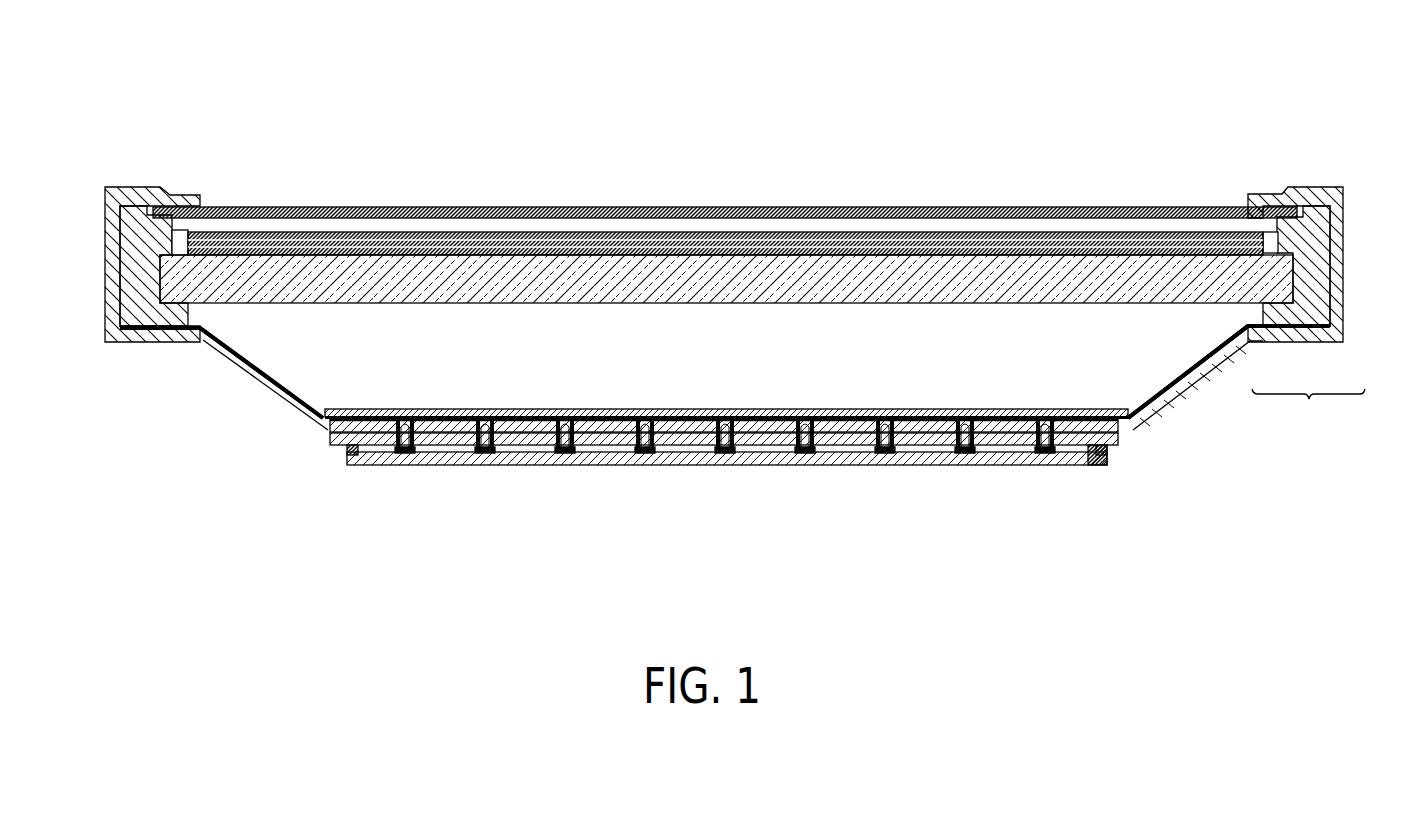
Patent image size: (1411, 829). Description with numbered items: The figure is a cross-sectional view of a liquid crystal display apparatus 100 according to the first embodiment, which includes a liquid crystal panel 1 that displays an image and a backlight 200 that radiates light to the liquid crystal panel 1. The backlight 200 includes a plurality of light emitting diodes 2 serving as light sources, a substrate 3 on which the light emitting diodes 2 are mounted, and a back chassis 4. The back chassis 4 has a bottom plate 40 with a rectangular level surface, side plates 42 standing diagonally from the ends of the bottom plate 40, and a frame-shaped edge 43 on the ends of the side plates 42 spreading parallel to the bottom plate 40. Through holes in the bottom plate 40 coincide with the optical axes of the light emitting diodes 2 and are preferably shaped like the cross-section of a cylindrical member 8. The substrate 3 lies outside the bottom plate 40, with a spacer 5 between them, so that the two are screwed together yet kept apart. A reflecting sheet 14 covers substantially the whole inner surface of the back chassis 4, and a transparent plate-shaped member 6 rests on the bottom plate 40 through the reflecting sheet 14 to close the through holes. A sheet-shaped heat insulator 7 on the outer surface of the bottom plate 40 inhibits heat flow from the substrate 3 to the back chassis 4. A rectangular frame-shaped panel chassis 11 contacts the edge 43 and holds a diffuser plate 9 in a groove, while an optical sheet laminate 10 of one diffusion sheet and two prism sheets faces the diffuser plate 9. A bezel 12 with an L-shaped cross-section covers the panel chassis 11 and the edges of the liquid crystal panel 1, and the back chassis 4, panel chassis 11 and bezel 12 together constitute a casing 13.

The liquid crystal display apparatus 100 is at (1008, 167).
The liquid crystal panel 1 is at (867, 206).
The optical sheet laminate 10 is at (457, 232).
The diffuser plate 9 is at (300, 304).
The cylindrical member 8 is at (406, 419).
The light emitting diodes 2 is at (404, 458).
The plate-shaped member 6 is at (983, 410).
The heat insulator 7 is at (1118, 438).
The substrate 3 is at (1106, 468).
The bottom plate 40 is at (1096, 467).
The spacer 5 is at (338, 448).
The back chassis 4 is at (1230, 358).
The side plates 42 is at (250, 384).
The edge 43 is at (160, 343).
The reflecting sheet 14 is at (1176, 383).
The panel chassis 11 is at (1288, 342).
The bezel 12 is at (1356, 330).
The casing 13 is at (1308, 416).
The backlight 200 is at (273, 418).